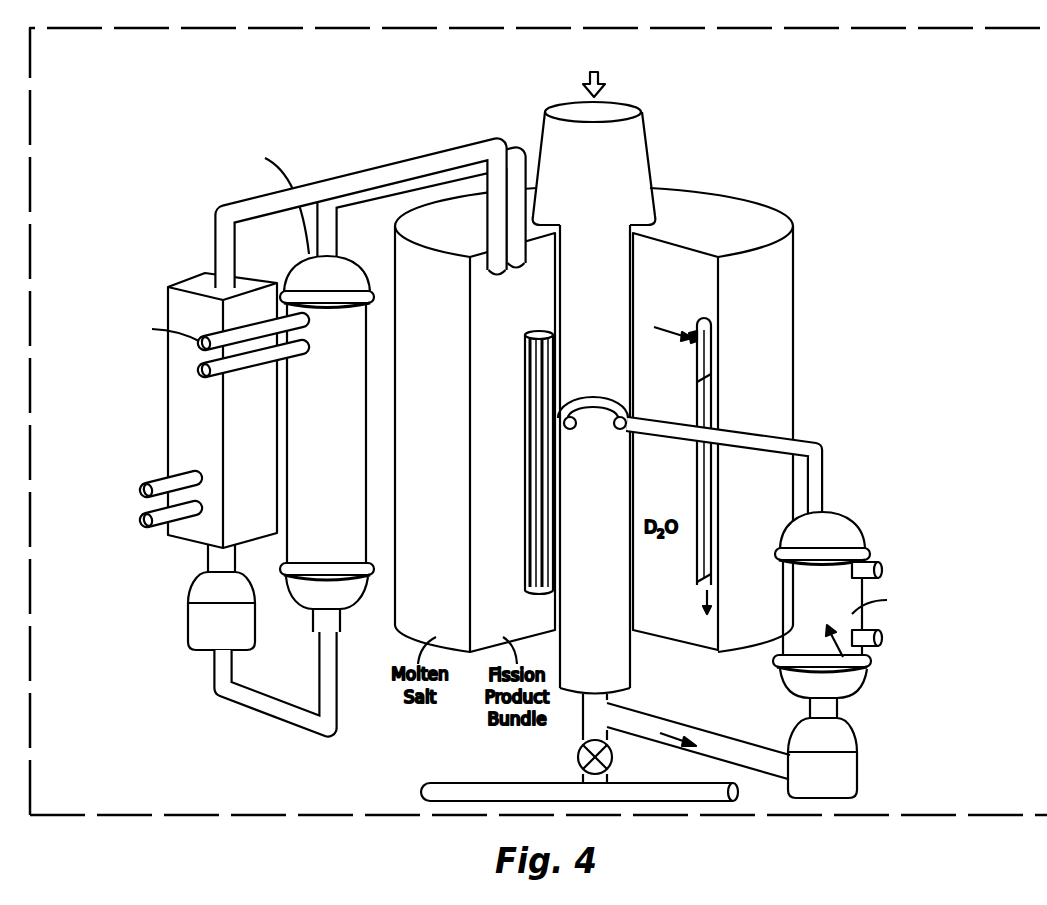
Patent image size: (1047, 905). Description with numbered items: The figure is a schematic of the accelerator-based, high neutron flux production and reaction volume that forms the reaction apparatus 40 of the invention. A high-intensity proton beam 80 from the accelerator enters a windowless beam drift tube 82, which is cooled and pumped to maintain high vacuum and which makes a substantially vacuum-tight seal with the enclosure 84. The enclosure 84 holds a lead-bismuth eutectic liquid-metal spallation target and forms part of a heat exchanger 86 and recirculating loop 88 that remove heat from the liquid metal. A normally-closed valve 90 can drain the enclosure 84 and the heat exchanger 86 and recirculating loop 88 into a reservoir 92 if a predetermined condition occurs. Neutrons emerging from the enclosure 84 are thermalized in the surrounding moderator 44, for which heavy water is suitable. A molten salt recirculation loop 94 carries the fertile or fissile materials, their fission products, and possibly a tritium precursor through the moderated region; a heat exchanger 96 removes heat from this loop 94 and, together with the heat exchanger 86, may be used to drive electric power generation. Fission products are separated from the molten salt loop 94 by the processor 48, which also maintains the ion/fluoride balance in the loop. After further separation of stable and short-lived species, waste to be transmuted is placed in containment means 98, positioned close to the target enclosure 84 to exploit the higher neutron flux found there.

The reaction apparatus 40 is at (1046, 352).
The moderator 44 is at (707, 316).
The processor 48 is at (164, 426).
The proton beam 80 is at (605, 80).
The windowless beam drift tube 82 is at (652, 153).
The enclosure 84 is at (634, 678).
The heat exchanger 86 is at (865, 668).
The recirculating loop 88 is at (820, 446).
The normally-closed valve 90 is at (578, 757).
The reservoir 92 is at (440, 778).
The molten salt recirculation loop 94 is at (413, 151).
The heat exchanger 96 is at (292, 268).
The containment means 98 is at (552, 365).